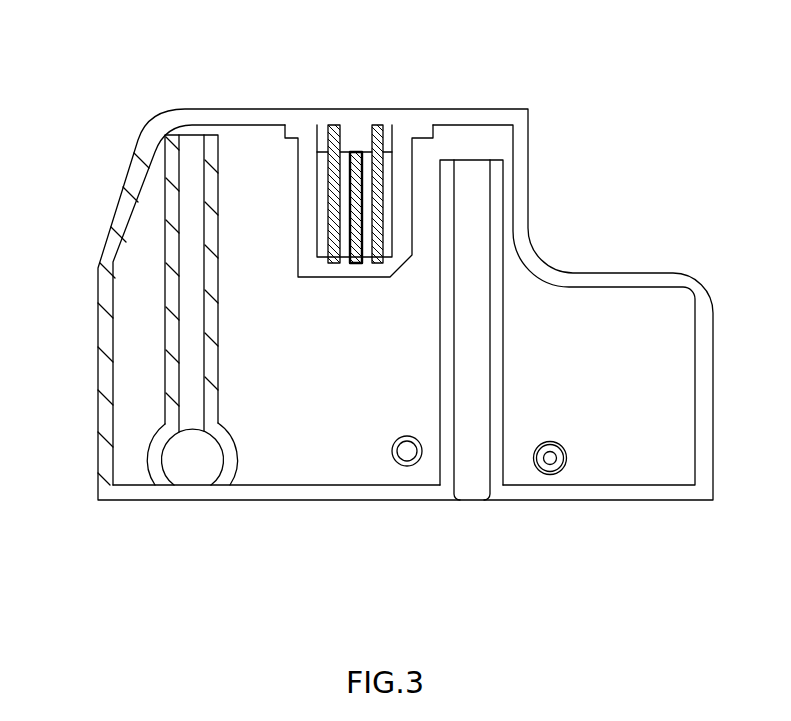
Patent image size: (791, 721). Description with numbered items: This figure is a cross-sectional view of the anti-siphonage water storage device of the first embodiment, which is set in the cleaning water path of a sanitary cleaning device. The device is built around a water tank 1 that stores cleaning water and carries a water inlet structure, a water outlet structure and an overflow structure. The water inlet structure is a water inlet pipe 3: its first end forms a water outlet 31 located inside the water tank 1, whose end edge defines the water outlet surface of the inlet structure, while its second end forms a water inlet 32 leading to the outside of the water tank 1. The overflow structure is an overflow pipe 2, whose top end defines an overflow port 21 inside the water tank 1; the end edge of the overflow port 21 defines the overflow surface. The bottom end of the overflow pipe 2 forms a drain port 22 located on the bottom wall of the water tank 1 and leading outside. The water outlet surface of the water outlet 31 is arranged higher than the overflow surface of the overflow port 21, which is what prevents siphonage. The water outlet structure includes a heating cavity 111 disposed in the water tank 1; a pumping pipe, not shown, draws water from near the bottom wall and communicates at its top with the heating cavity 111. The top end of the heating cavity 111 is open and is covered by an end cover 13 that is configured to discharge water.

The water tank 1 is at (670, 282).
The overflow pipe 2 is at (498, 377).
The water inlet pipe 3 is at (150, 328).
The end cover 13 is at (345, 140).
The overflow port 21 is at (548, 338).
The drain port 22 is at (472, 490).
The water outlet 31 is at (190, 142).
The water inlet 32 is at (192, 455).
The heating cavity 111 is at (400, 162).